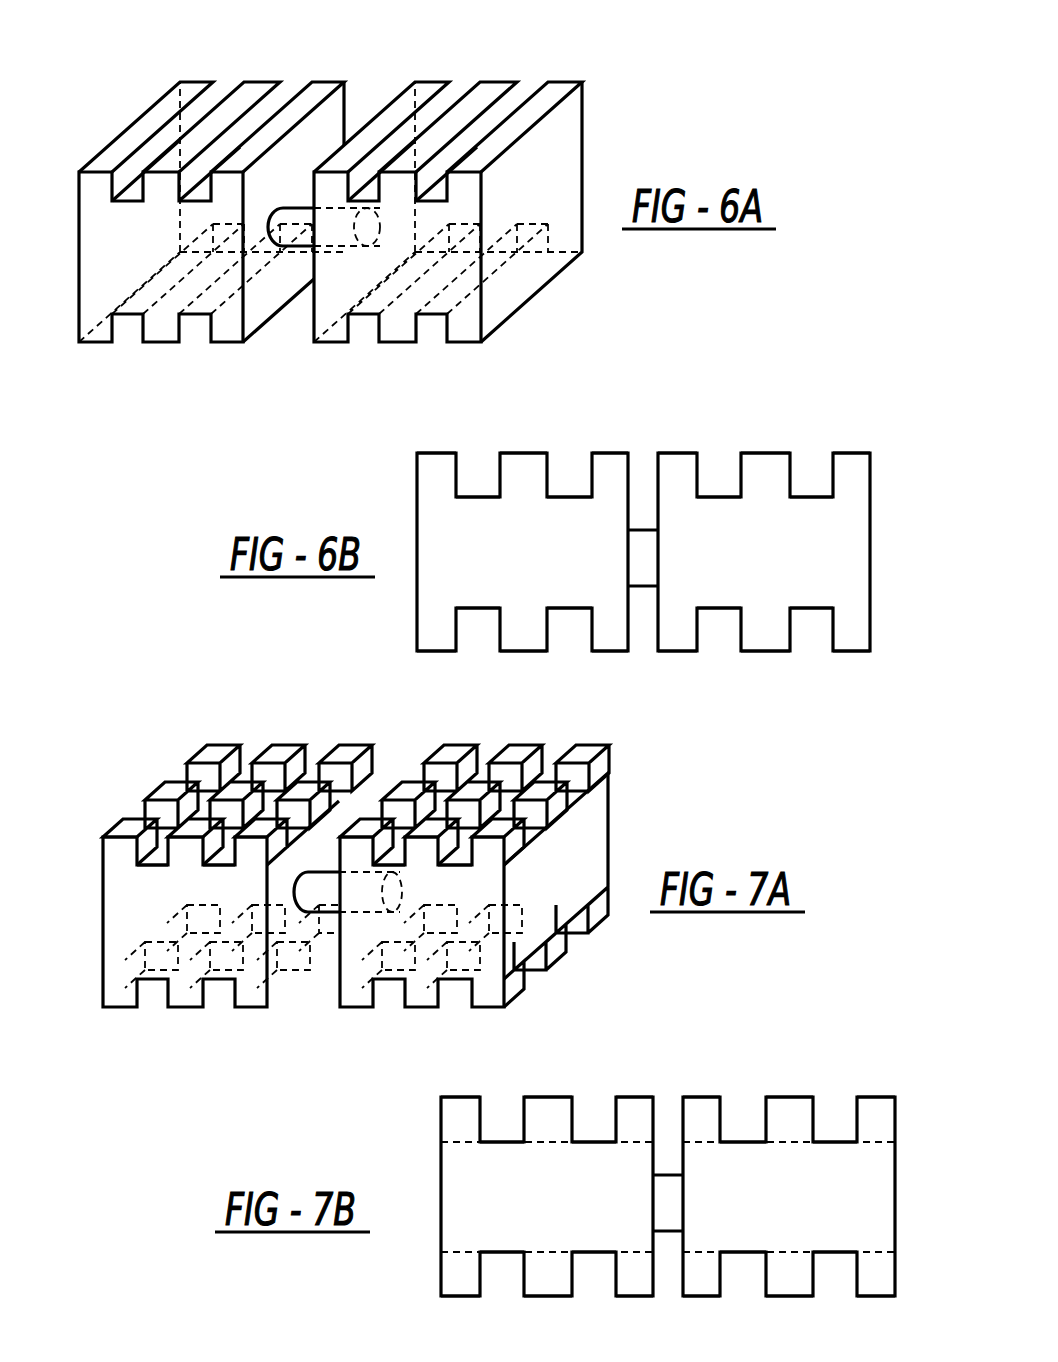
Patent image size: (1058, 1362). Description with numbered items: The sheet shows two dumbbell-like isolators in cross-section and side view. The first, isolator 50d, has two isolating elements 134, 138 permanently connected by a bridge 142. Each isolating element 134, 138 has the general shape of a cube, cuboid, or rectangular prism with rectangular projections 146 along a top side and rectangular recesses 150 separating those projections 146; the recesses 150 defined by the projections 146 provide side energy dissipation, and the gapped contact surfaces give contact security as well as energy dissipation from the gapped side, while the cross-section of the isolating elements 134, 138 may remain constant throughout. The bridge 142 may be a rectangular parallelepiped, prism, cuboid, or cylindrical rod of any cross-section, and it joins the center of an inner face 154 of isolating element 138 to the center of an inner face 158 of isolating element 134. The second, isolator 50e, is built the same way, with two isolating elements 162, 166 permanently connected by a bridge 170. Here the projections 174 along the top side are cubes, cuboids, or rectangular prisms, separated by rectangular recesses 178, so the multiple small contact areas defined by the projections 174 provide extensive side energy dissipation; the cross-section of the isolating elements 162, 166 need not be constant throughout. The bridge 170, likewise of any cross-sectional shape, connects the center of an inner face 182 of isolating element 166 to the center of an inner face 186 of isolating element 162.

In FIG. 6A, the isolator 50d is at (582, 52).
In FIG. 6B, the isolator 50d is at (843, 391).
In FIG. 7A, the isolator 50e is at (117, 735).
In FIG. 7B, the isolator 50e is at (859, 1061).
In FIG. 6A, the isolating element 134 is at (68, 237).
In FIG. 6B, the isolating element 134 is at (432, 606).
In FIG. 6A, the isolating element 138 is at (560, 143).
In FIG. 6B, the isolating element 138 is at (767, 483).
In FIG. 6A, the bridge 142 is at (308, 234).
In FIG. 6B, the bridge 142 is at (643, 535).
In FIG. 6A, the rectangular projections 146 is at (275, 127).
In FIG. 6B, the rectangular projections 146 is at (603, 452).
In FIG. 6A, the rectangular recesses 150 is at (127, 203).
In FIG. 6B, the rectangular recesses 150 is at (573, 607).
In FIG. 6A, the inner face 154 is at (402, 141).
In FIG. 6A, the inner face 158 is at (258, 318).
In FIG. 7A, the isolating element 162 is at (89, 976).
In FIG. 7B, the isolating element 162 is at (453, 1272).
In FIG. 7A, the isolating element 166 is at (593, 808).
In FIG. 7B, the isolating element 166 is at (782, 1280).
In FIG. 7A, the bridge 170 is at (330, 898).
In FIG. 7B, the bridge 170 is at (670, 1213).
In FIG. 7A, the projections 174 is at (124, 824).
In FIG. 7B, the projections 174 is at (625, 1097).
In FIG. 7A, the rectangular recesses 178 is at (318, 781).
In FIG. 7B, the rectangular recesses 178 is at (595, 1252).
In FIG. 7A, the inner face 182 is at (367, 927).
In FIG. 7A, the inner face 186 is at (287, 962).